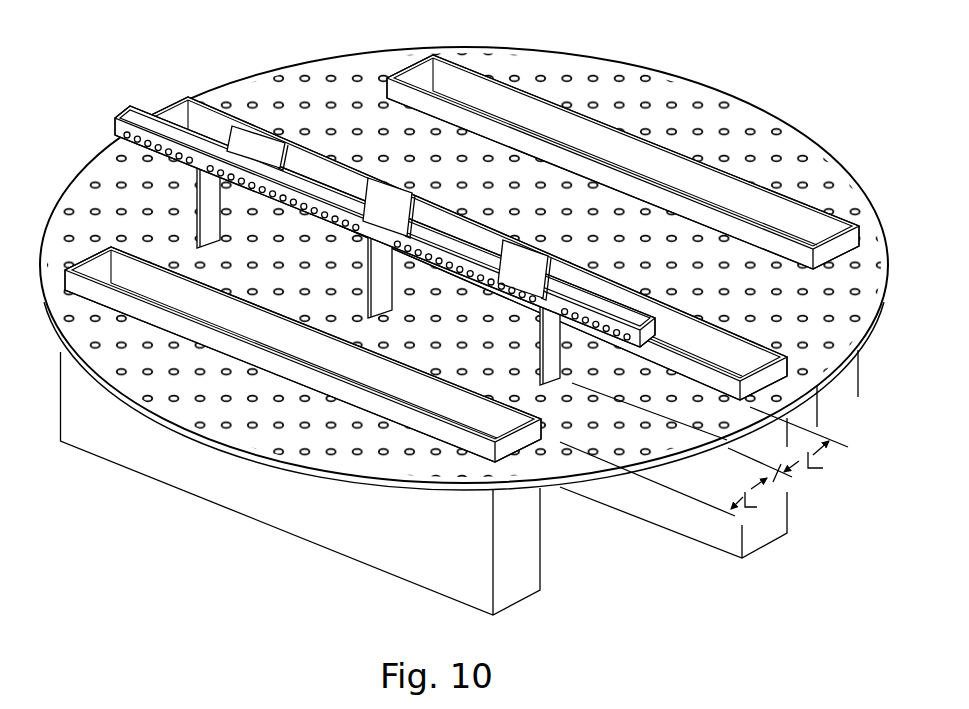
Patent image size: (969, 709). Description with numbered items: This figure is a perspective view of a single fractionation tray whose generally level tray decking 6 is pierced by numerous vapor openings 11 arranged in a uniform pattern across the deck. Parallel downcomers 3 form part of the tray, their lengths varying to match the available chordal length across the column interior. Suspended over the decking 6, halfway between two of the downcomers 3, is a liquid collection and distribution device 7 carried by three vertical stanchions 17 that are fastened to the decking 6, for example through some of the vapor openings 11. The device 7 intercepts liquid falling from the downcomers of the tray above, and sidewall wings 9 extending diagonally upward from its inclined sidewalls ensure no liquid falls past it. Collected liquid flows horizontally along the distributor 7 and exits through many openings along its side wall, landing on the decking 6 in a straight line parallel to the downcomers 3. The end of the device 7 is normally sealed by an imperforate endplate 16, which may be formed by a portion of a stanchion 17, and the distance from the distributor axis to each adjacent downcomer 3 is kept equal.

The downcomer 3 is at (180, 96).
The tray decking 6 is at (385, 142).
The liquid collection and distribution device 7 is at (121, 110).
The sidewall wings 9 is at (232, 125).
The vapor openings 11 is at (110, 377).
The imperforate endplate 16 is at (645, 332).
The stanchion 17 is at (196, 222).